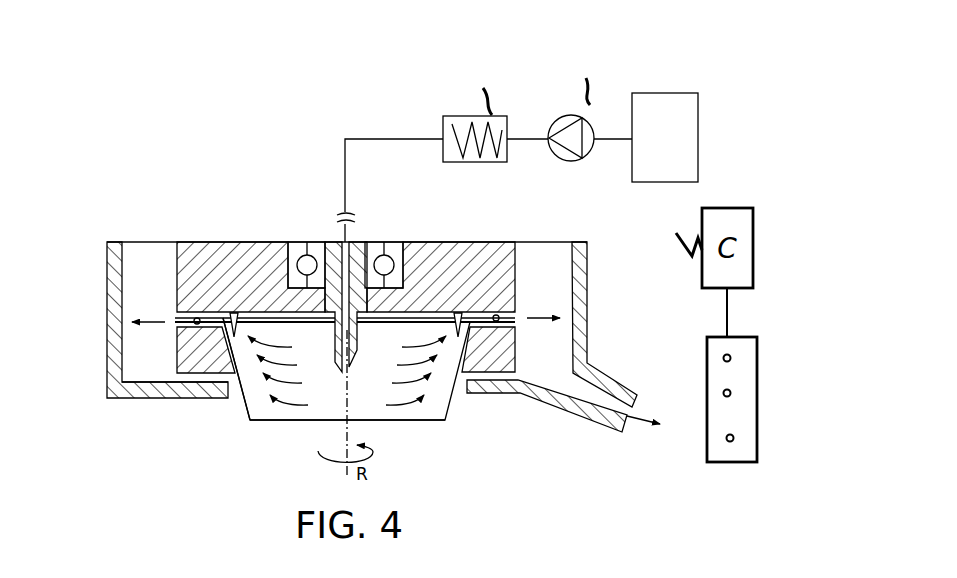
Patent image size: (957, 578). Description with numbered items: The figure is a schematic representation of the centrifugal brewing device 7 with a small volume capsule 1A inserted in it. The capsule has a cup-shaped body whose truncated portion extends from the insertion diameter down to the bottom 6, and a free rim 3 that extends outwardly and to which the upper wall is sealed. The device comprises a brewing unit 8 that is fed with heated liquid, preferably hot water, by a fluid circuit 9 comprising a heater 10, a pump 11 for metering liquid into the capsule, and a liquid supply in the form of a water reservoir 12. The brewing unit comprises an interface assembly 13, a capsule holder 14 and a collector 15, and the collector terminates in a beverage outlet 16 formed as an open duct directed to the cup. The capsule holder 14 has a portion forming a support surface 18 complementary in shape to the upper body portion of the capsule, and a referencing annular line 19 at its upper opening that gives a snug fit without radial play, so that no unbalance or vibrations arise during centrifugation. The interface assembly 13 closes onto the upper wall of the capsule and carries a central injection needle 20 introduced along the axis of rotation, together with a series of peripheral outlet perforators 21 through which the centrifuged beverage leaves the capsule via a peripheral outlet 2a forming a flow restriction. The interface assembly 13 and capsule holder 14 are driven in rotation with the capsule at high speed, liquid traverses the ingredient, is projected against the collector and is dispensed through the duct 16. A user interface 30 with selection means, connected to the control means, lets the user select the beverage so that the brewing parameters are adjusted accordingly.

The small volume capsule 1A is at (449, 413).
The channel 2a is at (168, 306).
The free rim 3 is at (207, 322).
The bottom 6 is at (408, 421).
The centrifugal brewing device 7 is at (614, 356).
The brewing unit 8 is at (554, 284).
The fluid circuit 9 is at (382, 137).
The heater 10 is at (475, 115).
The pump 11 is at (572, 115).
The water reservoir 12 is at (665, 184).
The interface assembly 13 is at (278, 242).
The capsule holder 14 is at (172, 358).
The collector 15 is at (107, 283).
The beverage outlet 16 is at (633, 396).
The support surface 18 is at (240, 363).
The referencing annular line 19 is at (215, 330).
The central injection needle 20 is at (358, 340).
The outlet perforators 21 is at (243, 318).
The user interface 30 is at (759, 379).